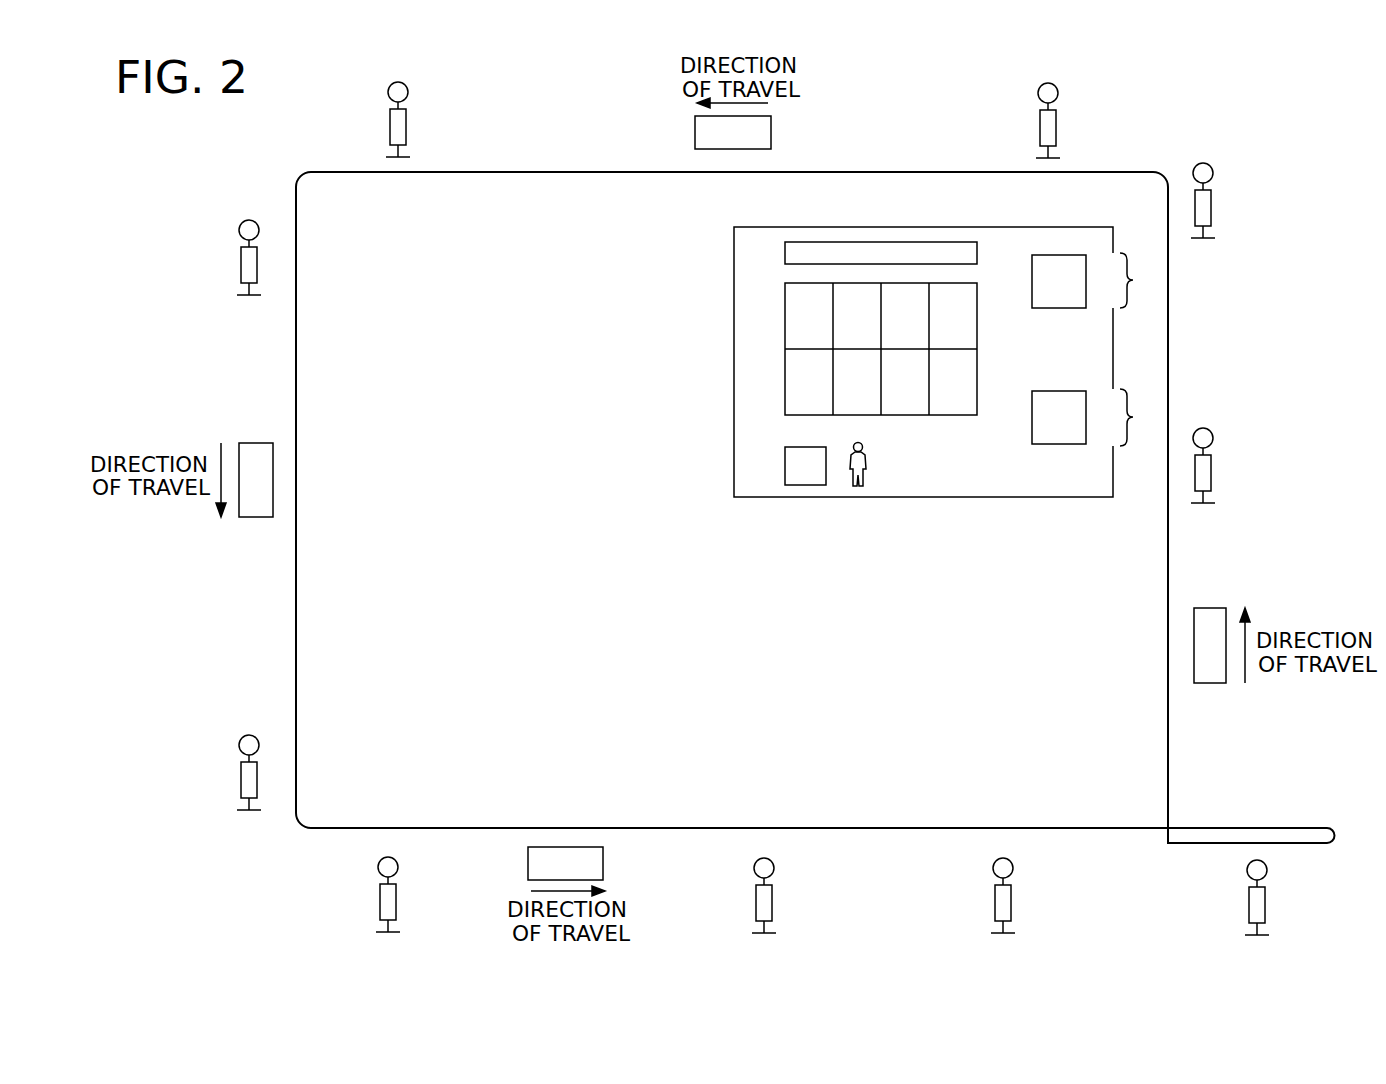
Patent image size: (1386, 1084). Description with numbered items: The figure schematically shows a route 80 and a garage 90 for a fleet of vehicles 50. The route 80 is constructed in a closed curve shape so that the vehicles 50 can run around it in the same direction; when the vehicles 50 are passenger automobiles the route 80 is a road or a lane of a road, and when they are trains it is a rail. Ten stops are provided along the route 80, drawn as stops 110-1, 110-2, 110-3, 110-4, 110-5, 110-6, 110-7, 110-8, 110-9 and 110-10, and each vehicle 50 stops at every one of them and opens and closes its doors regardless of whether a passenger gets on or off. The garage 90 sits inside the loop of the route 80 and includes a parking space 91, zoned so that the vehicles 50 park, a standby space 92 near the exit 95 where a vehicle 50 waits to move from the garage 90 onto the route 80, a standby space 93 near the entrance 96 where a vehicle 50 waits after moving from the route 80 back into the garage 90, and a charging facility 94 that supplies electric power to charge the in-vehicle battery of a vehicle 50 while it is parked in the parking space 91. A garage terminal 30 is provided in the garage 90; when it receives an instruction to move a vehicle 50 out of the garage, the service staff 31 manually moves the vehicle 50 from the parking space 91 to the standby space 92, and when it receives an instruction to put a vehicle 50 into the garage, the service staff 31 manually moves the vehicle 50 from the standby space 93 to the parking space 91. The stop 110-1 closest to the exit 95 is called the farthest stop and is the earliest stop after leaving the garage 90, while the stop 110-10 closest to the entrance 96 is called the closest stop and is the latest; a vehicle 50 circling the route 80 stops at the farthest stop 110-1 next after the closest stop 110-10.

The route 80 is at (1168, 551).
The garage 90 is at (973, 497).
The parking space 91 is at (785, 333).
The standby space 92 is at (1053, 308).
The standby space 93 is at (1053, 444).
The charging facility 94 is at (785, 253).
The exit 95 is at (1144, 280).
The entrance 96 is at (1144, 417).
The garage terminal 30 is at (785, 467).
The service staff 31 is at (866, 462).
The vehicle 50 is at (771, 132).
The stop 110-1 is at (1211, 210).
The stop 110-2 is at (1056, 131).
The stop 110-3 is at (406, 130).
The stop 110-4 is at (241, 265).
The stop 110-5 is at (241, 780).
The stop 110-6 is at (396, 900).
The stop 110-7 is at (772, 903).
The stop 110-8 is at (1011, 903).
The stop 110-9 is at (1265, 905).
The stop 110-10 is at (1211, 475).